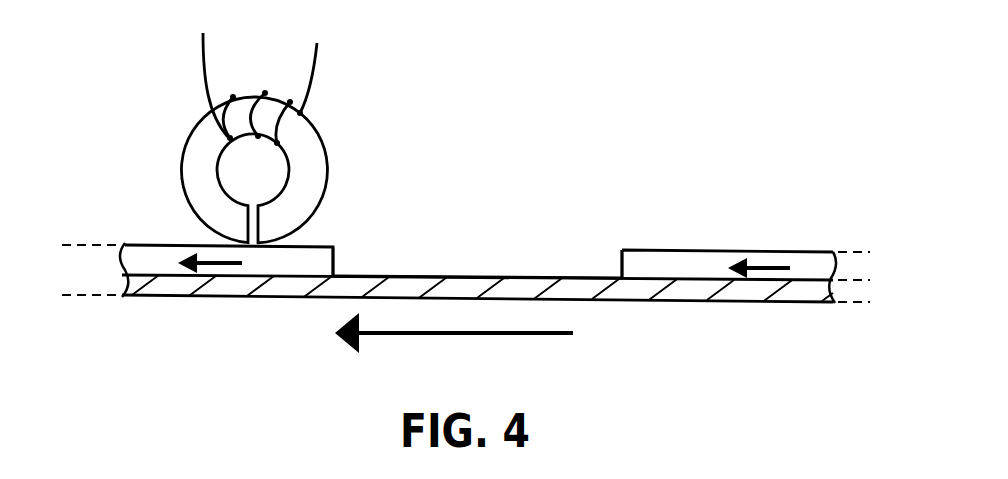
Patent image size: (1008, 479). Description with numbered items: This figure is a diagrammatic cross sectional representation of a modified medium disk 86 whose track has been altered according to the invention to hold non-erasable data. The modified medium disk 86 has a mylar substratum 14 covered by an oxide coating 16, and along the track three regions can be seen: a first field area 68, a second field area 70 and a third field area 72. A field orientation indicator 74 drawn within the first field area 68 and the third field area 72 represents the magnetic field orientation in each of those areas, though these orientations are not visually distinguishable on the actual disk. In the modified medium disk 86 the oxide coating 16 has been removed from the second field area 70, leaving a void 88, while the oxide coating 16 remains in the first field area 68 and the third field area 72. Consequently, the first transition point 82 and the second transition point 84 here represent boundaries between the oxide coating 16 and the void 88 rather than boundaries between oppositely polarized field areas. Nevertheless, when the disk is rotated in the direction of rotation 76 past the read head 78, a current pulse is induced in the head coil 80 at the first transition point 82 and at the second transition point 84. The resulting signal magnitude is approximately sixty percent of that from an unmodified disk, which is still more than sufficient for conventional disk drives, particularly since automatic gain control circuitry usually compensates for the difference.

The mylar substratum 14 is at (836, 297).
The oxide coating 16 is at (120, 265).
The first field area 68 is at (140, 246).
The second field area 70 is at (547, 260).
The third field area 72 is at (694, 262).
The field orientation indicator 74 is at (205, 248).
The direction of rotation 76 is at (460, 336).
The read head 78 is at (182, 150).
The head coil 80 is at (316, 50).
The first transition point 82 is at (334, 247).
The second transition point 84 is at (620, 250).
The modified medium disk 86 is at (208, 128).
The void 88 is at (475, 274).